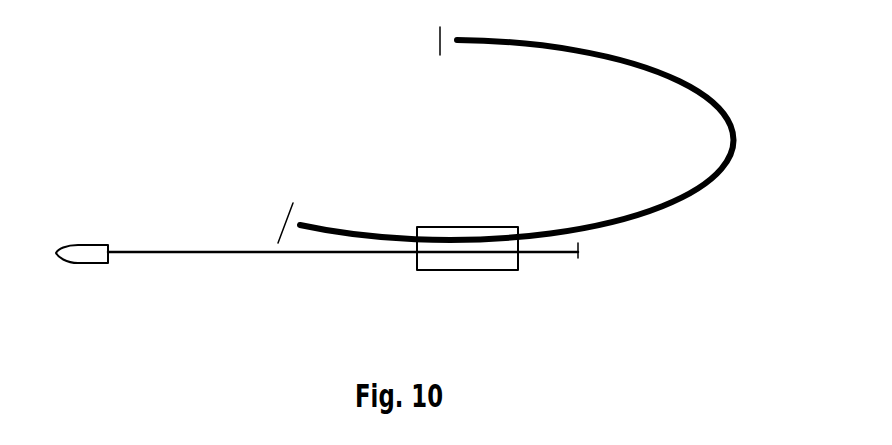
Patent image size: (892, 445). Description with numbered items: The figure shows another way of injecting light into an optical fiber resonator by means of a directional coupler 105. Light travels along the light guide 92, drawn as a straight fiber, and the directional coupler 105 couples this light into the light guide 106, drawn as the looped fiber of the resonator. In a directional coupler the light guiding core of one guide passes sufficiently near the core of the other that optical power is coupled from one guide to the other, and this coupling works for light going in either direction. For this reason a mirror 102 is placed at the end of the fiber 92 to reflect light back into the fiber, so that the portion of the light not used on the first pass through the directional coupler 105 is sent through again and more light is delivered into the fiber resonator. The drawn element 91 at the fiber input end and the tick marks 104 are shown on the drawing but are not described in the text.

The bullet-shaped tip 91 is at (97, 263).
The light guide 92 is at (247, 253).
The mirror 102 is at (585, 252).
The tick marks 104 is at (287, 208).
The directional coupler 105 is at (487, 270).
The light guide 106 is at (637, 58).